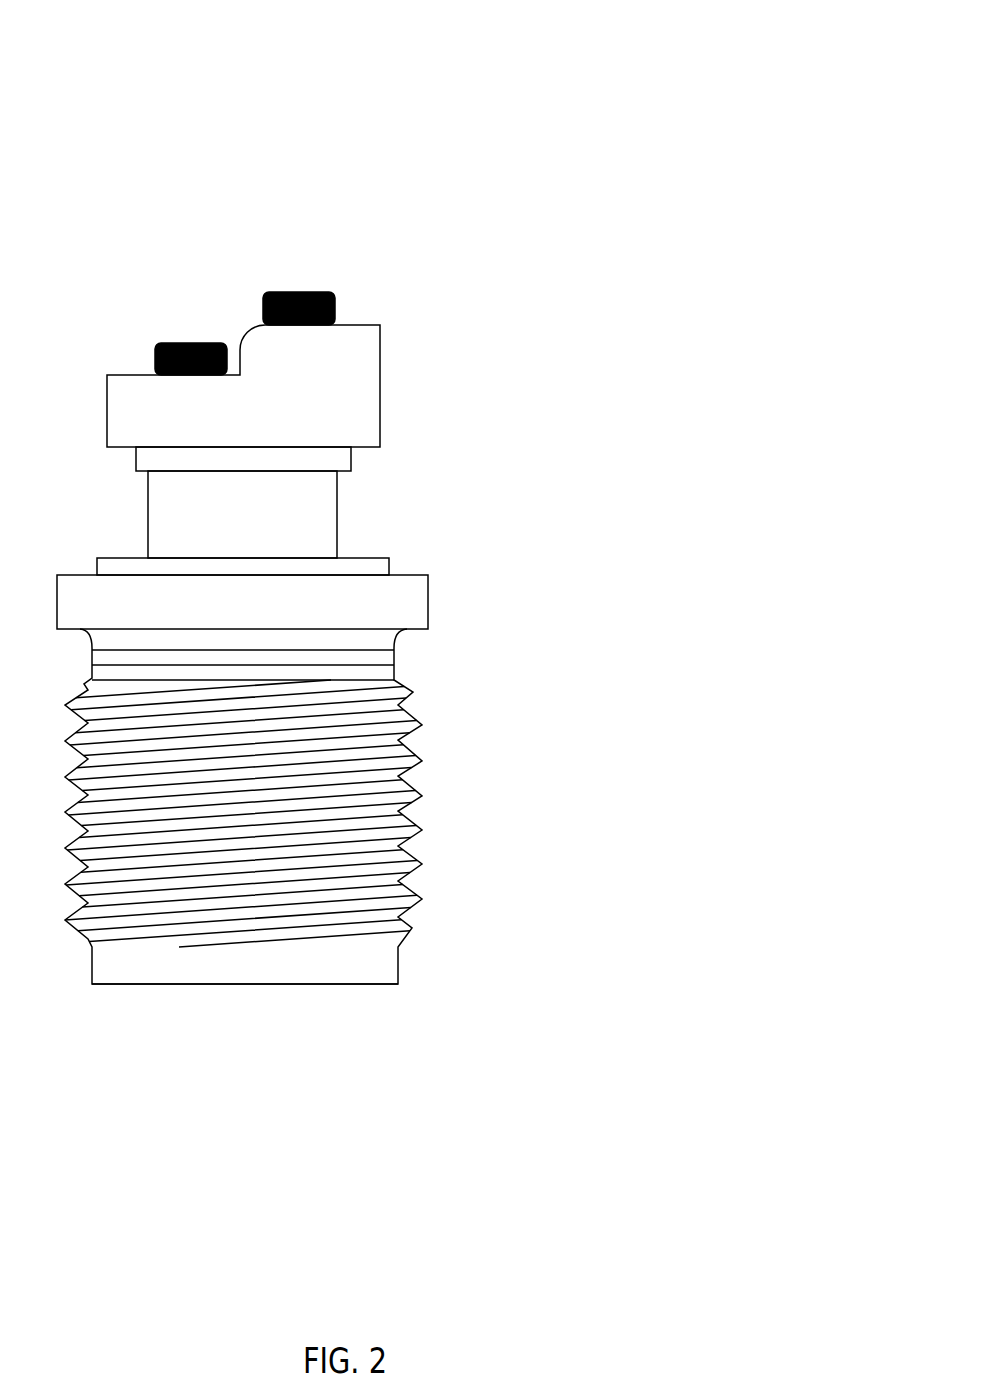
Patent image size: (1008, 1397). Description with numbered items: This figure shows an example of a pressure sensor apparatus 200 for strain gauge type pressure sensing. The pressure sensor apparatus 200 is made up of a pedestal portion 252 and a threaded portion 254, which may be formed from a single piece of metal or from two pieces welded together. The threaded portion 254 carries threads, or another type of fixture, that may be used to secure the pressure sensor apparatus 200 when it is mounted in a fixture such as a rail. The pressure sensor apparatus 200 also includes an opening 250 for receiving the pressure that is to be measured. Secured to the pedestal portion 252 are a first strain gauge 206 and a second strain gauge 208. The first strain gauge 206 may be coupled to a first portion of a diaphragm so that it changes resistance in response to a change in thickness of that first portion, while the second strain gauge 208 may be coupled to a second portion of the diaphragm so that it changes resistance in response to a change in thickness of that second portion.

The pressure sensor apparatus 200 is at (465, 566).
The first strain gauge 206 is at (190, 333).
The second strain gauge 208 is at (305, 278).
The opening 250 is at (244, 1000).
The pedestal portion 252 is at (483, 630).
The threaded portion 254 is at (483, 947).